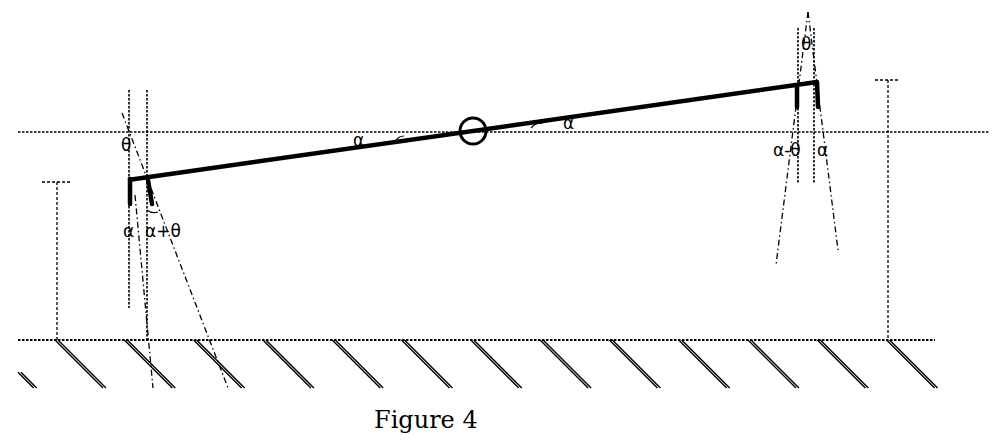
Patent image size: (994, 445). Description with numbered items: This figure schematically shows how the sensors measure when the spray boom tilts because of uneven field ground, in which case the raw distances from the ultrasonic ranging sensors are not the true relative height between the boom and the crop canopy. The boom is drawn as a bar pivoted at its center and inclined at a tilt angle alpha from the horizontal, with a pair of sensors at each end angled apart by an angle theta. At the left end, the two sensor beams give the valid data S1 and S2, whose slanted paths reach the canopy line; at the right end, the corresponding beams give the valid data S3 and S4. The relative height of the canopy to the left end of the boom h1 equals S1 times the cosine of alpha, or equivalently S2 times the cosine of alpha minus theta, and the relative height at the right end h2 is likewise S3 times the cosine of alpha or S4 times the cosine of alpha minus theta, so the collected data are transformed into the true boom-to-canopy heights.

The valid data from ultrasonic ranging sensor A S1 is at (135, 291).
The valid data from ultrasonic ranging sensor B S2 is at (175, 250).
The valid data from ultrasonic ranging sensor C S3 is at (823, 137).
The valid data from ultrasonic ranging sensor D S4 is at (771, 138).
The relative height of canopy to left end of spray boom h1 is at (51, 261).
The relative height of canopy to right end of spray boom h2 is at (899, 210).